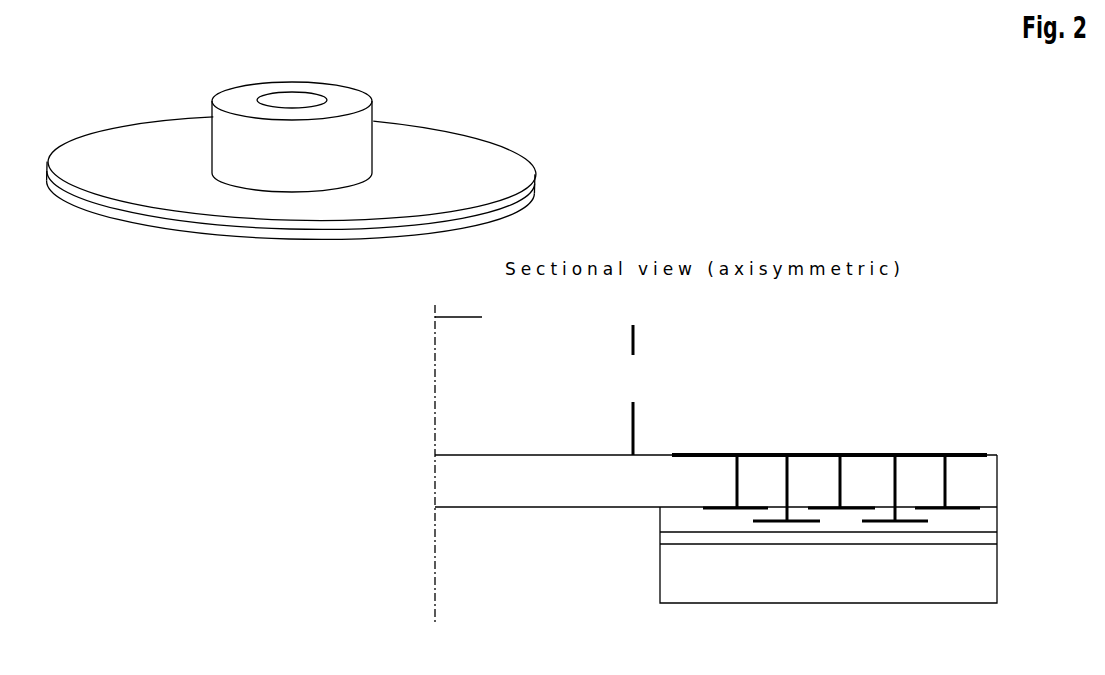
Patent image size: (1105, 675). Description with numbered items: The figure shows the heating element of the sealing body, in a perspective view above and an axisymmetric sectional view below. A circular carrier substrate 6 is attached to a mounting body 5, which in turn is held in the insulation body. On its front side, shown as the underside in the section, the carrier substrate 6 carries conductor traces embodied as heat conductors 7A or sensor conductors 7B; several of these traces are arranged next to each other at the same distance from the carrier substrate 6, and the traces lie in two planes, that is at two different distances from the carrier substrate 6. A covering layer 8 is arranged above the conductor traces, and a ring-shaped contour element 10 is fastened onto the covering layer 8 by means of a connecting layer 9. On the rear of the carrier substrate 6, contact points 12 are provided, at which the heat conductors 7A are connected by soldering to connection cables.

The mounting body 5 is at (366, 149).
The carrier substrate 6 is at (517, 159).
The heat conductor 7A is at (985, 510).
The sensor conductor 7B is at (1028, 516).
The covering layer 8 is at (990, 532).
The connecting layer 9 is at (990, 545).
The contour element 10 is at (523, 206).
The contact point 12 is at (985, 453).